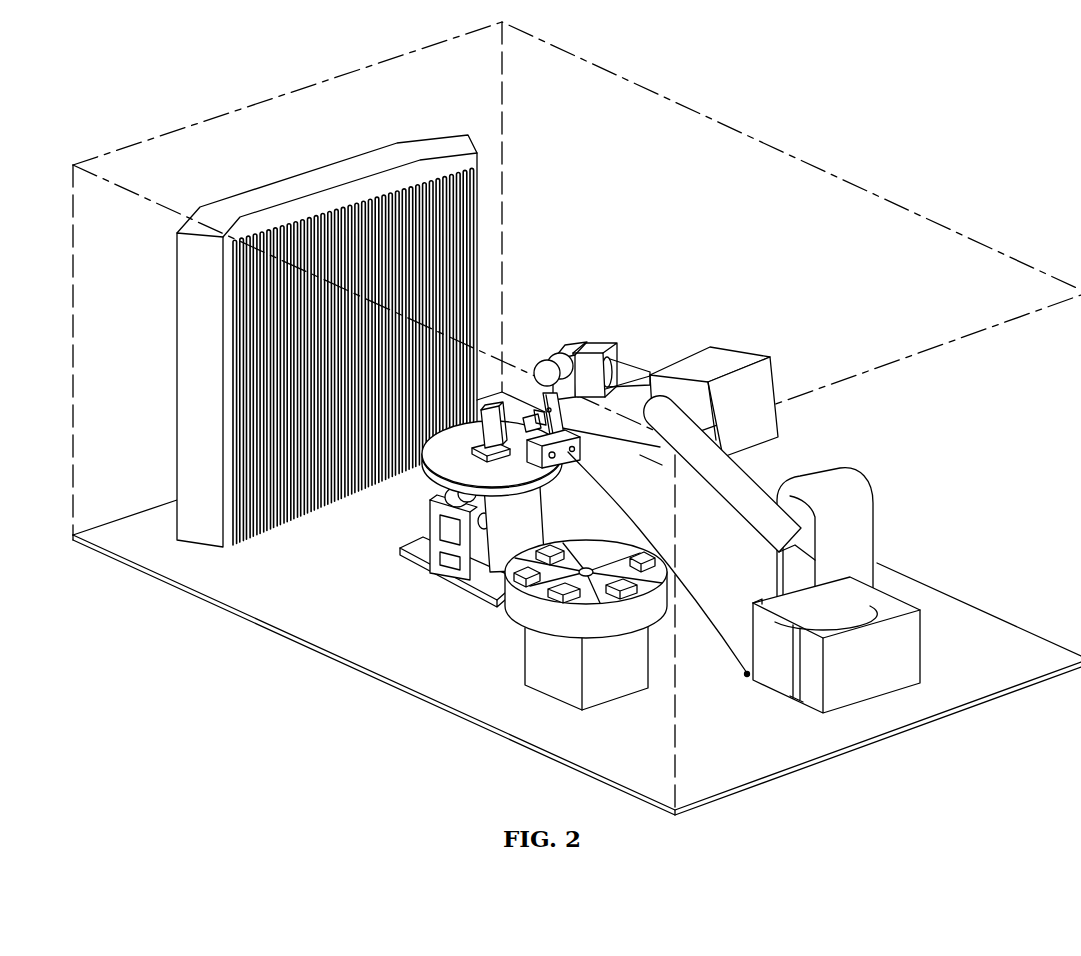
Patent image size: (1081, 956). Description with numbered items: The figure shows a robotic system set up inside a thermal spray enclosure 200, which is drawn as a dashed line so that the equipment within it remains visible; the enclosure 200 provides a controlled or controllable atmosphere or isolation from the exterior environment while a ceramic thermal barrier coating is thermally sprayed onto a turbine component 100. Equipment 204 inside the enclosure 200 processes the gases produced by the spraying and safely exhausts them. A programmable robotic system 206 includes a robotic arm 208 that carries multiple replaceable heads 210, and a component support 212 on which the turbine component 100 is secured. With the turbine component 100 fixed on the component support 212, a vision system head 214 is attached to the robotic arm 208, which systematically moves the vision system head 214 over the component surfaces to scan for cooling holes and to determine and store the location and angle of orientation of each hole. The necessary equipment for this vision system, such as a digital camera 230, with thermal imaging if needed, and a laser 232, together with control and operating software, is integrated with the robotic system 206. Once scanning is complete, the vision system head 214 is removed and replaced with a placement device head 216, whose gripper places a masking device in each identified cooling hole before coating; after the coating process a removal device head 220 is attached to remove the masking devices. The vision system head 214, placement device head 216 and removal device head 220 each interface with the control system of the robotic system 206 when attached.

The turbine component 100 is at (482, 470).
The thermal spray enclosure 200 is at (985, 247).
The equipment 204 is at (343, 162).
The programmable robotic system 206 is at (862, 548).
The robotic arm 208 is at (668, 342).
The replaceable heads 210 is at (503, 657).
The component support 212 is at (420, 543).
The vision system head 214 is at (570, 447).
The placement device head 216 is at (747, 675).
The removal device head 220 is at (642, 578).
The digital camera 230 is at (529, 395).
The laser 232 is at (502, 400).